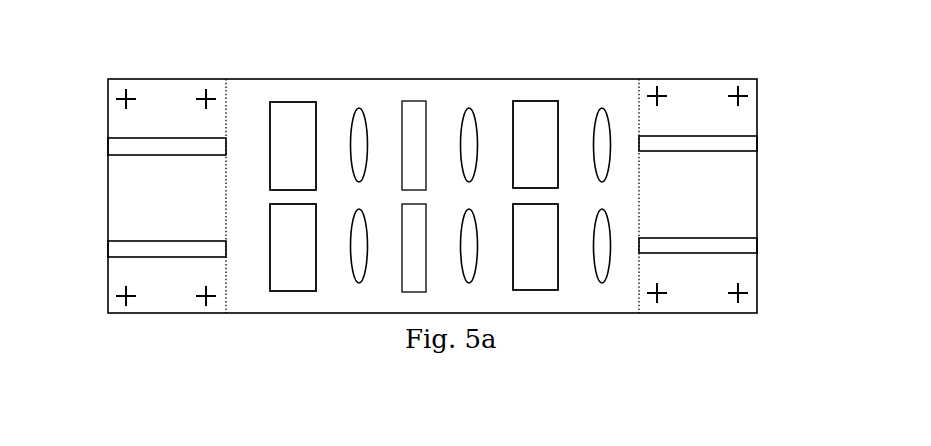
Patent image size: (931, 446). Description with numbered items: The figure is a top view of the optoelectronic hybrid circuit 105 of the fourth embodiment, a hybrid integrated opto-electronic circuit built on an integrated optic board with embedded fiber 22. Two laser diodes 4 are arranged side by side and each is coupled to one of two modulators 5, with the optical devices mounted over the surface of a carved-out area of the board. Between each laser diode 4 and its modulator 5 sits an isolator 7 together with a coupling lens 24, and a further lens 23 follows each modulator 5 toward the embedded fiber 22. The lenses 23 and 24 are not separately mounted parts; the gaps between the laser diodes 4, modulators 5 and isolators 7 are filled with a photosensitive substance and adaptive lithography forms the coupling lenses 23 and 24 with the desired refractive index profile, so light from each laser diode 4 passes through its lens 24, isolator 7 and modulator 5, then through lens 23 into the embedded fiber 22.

The optoelectronic hybrid circuit 105 is at (124, 197).
The laser diode 4 is at (292, 110).
The lens 24 is at (359, 118).
The isolator 7 is at (413, 107).
The modulator 5 is at (535, 107).
The lens 23 is at (602, 112).
The embedded fiber 22 is at (757, 143).